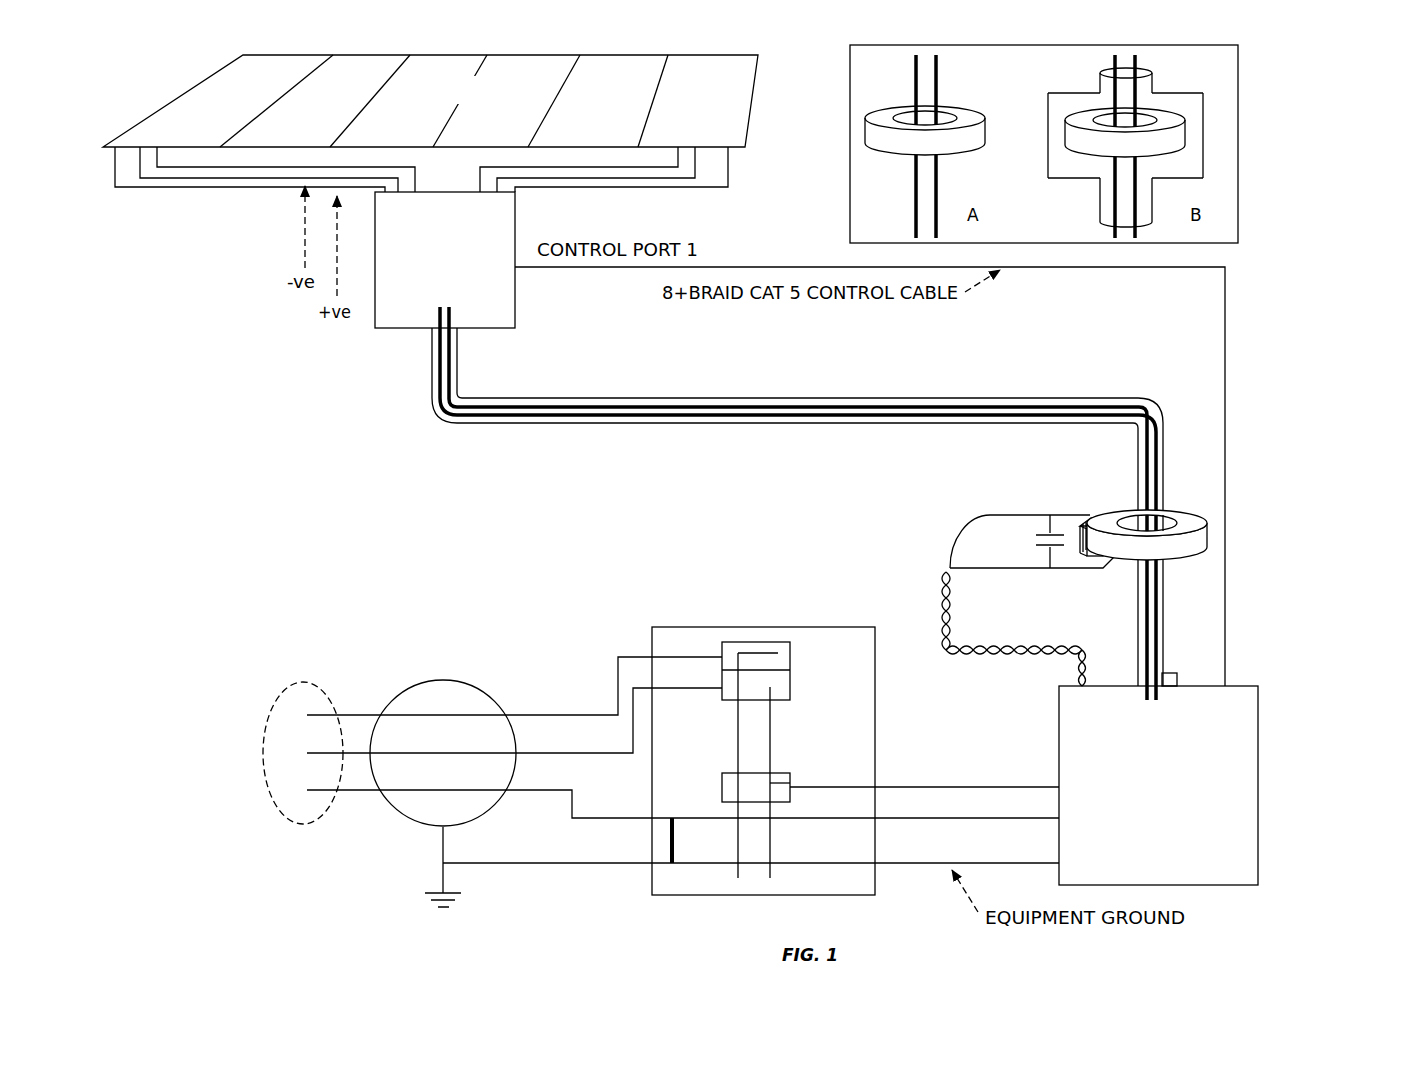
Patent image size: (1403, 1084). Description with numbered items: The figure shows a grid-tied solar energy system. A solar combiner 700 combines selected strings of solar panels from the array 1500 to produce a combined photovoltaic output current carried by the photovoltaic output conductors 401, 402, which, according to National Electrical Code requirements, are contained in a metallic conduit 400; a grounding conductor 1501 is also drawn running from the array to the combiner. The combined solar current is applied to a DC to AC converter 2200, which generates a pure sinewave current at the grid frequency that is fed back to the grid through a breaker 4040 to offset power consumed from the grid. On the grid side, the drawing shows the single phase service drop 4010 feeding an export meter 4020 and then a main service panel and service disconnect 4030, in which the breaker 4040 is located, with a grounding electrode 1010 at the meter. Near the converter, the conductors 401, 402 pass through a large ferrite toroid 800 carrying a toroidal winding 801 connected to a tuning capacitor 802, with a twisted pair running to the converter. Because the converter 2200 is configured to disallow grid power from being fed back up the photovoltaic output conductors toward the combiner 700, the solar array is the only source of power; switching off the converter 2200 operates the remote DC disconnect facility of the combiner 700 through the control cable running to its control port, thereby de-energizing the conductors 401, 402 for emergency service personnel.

The array 1500 is at (430, 101).
The grounding conductor 1501 is at (130, 196).
The solar combiner 700 is at (445, 260).
The metallic conduit 400 is at (928, 396).
The photovoltaic output conductor 401 is at (853, 427).
The photovoltaic output conductor 402 is at (1070, 396).
The large ferrite toroid 800 is at (1186, 505).
The toroidal winding 801 is at (1070, 510).
The tuning capacitor 802 is at (1018, 543).
The DC to AC converter 2200 is at (1158, 779).
The single phase 120/240 service drop 4010 is at (271, 688).
The export meter 4020 is at (470, 677).
The main service panel and service disconnect 4030 is at (803, 622).
The breaker 4040 is at (796, 773).
The grounding electrode 1010 is at (400, 900).